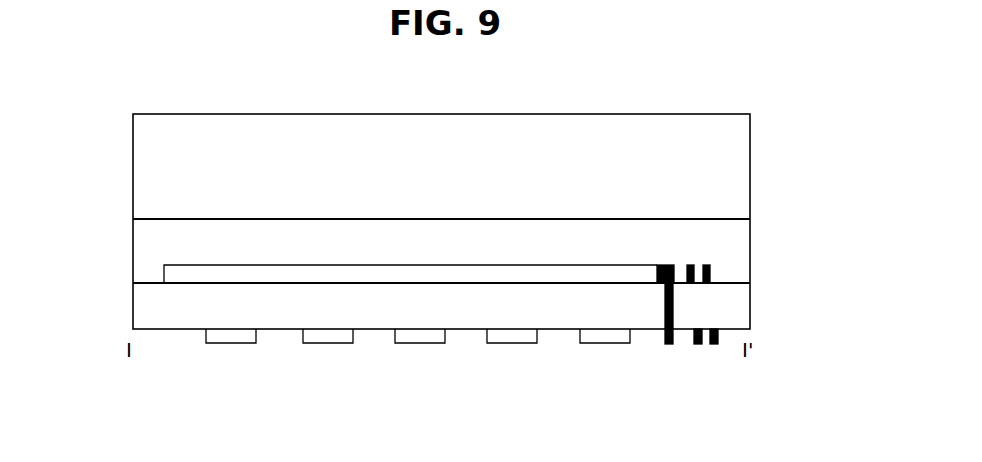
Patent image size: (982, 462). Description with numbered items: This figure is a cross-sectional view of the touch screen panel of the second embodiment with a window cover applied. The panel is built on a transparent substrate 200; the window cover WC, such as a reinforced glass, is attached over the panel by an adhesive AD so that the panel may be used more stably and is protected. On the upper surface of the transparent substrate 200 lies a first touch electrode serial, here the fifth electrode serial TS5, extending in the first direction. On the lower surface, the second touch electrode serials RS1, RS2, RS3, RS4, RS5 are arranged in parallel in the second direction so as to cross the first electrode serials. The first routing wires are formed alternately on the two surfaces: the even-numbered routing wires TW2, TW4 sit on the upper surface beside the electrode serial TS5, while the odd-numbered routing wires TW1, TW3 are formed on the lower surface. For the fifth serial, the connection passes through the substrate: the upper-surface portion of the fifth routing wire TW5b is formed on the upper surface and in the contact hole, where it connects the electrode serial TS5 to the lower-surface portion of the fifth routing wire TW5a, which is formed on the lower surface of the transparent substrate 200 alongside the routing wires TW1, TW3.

The window cover WC is at (743, 165).
The adhesive AD is at (743, 231).
The transparent substrate 200 is at (743, 305).
The fifth first electrode serial TS5 is at (166, 272).
The fifth 1-2 routing wire TW5b is at (669, 265).
The fourth first routing wire TW4 is at (690, 265).
The second first routing wire TW2 is at (712, 272).
The fifth 1-1 routing wire TW5a is at (665, 338).
The third first routing wire TW3 is at (696, 344).
The first first routing wire TW1 is at (714, 344).
The first second electrode serial RS1 is at (231, 338).
The second second electrode serial RS2 is at (328, 338).
The third second electrode serial RS3 is at (423, 338).
The fourth second electrode serial RS4 is at (515, 338).
The fifth second electrode serial RS5 is at (607, 338).